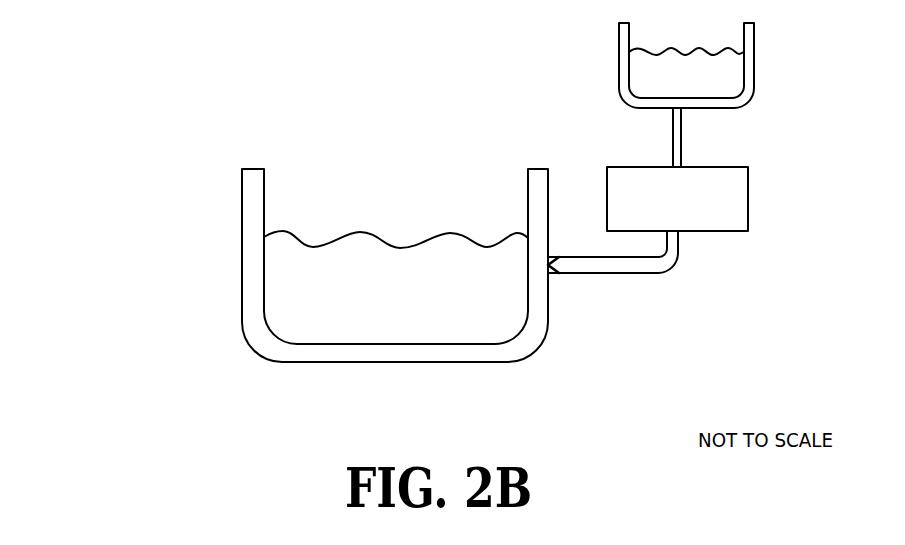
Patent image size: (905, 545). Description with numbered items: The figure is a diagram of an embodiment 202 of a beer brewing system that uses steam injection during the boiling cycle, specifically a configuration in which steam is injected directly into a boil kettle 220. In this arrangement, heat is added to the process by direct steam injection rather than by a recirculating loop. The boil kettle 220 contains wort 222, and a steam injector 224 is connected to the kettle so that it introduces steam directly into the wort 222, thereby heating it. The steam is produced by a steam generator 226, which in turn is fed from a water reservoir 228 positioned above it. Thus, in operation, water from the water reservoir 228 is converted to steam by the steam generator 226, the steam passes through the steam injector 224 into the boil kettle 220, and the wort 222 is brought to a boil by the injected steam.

The embodiment 202 is at (410, 263).
The boil kettle 220 is at (257, 211).
The wort 222 is at (300, 302).
The steam injector 224 is at (562, 277).
The steam generator 226 is at (728, 232).
The water reservoir 228 is at (614, 95).